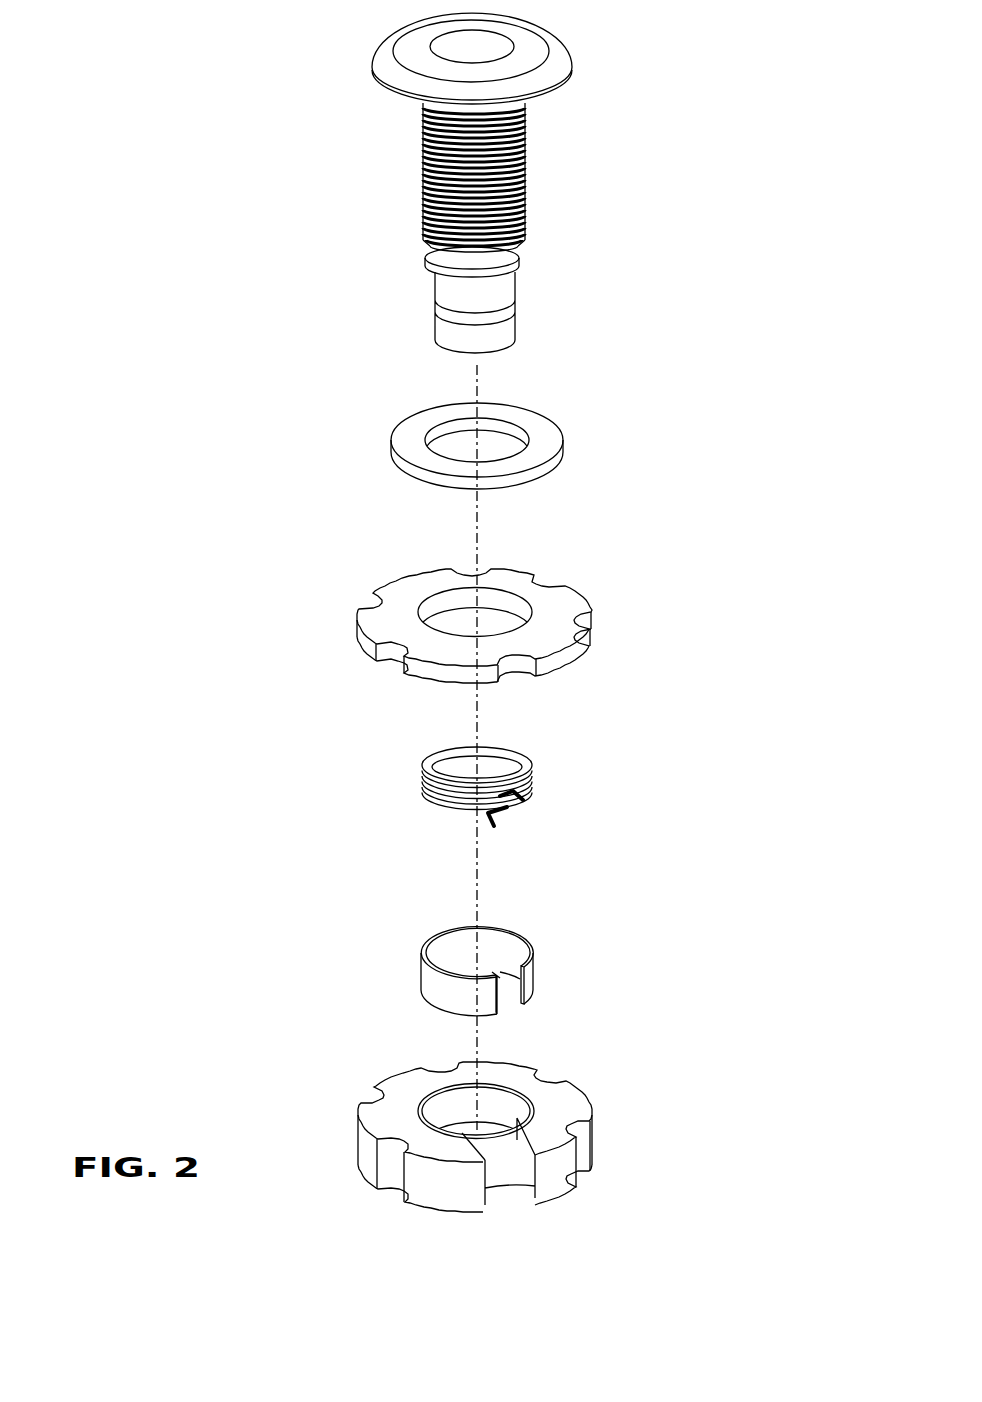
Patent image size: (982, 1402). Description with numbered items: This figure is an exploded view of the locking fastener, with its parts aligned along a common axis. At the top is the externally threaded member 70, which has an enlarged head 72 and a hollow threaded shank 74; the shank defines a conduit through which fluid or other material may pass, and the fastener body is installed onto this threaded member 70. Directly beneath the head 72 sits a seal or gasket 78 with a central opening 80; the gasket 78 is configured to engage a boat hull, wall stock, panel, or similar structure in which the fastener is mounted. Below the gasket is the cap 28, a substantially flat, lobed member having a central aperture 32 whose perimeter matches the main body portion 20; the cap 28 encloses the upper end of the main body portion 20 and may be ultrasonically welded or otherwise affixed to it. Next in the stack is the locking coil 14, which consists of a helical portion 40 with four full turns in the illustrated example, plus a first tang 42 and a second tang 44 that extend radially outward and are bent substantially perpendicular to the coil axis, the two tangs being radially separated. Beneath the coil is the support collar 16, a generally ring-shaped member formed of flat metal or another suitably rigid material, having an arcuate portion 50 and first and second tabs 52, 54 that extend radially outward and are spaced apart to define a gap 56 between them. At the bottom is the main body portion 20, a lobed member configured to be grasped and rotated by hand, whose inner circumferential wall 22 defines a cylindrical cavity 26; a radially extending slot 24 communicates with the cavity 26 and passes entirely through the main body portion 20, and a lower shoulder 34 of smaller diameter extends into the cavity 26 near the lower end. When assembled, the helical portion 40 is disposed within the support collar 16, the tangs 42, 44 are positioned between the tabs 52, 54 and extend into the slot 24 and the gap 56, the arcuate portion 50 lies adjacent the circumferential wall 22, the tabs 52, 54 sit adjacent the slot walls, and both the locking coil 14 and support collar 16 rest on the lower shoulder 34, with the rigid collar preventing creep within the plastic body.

The locking coil 14 is at (481, 807).
The support collar 16 is at (486, 989).
The main body portion 20 is at (487, 1163).
The inner circumferential wall 22 is at (448, 1095).
The radially extending slot 24 is at (505, 1172).
The cylindrical cavity 26 is at (494, 1156).
The cap 28 is at (513, 594).
The central aperture 32 is at (510, 622).
The lower shoulder 34 is at (576, 1117).
The helical portion 40 is at (426, 760).
The first tang 42 is at (528, 798).
The second tang 44 is at (490, 825).
The arcuate portion 50 is at (424, 949).
The first tab 52 is at (527, 1003).
The second tab 54 is at (487, 1002).
The gap 56 is at (513, 1003).
The externally threaded member 70 is at (510, 183).
The head 72 is at (528, 38).
The threaded shank 74 is at (507, 288).
The gasket 78 is at (488, 427).
The central opening 80 is at (449, 442).